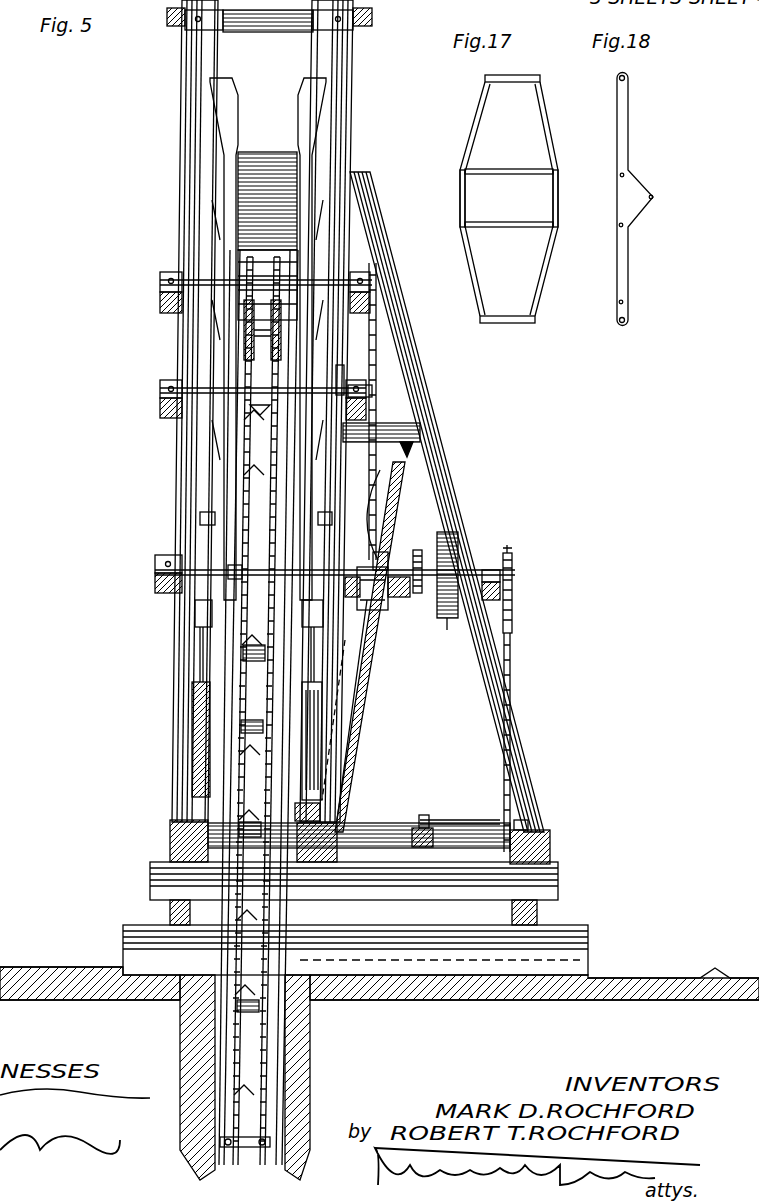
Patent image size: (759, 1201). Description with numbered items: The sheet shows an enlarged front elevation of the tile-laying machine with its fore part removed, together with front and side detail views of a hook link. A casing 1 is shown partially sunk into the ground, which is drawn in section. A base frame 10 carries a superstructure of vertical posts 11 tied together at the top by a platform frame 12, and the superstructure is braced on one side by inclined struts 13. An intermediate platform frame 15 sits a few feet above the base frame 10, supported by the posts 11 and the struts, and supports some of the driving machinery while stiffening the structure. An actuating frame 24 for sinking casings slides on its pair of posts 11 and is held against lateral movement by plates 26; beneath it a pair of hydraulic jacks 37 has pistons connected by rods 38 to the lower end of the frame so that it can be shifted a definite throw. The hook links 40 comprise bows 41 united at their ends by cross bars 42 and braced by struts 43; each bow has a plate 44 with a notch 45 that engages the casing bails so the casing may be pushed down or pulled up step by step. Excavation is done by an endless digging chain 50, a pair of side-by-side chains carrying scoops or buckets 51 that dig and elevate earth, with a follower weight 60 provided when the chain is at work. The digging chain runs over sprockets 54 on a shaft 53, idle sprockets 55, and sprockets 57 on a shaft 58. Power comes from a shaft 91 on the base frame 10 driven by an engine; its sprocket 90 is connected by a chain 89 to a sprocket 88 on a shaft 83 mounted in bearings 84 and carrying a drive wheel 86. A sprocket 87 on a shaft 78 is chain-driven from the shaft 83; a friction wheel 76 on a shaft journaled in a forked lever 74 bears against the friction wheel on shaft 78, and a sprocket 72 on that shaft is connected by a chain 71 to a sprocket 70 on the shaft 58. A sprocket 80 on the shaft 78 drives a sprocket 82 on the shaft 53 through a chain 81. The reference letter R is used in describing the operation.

In FIG. 5, the casing 1 is at (258, 152).
In FIG. 5, the base frame 10 is at (437, 853).
In FIG. 5, the vertical posts 11 is at (193, 118).
In FIG. 5, the platform frame 12 is at (374, 28).
In FIG. 5, the inclined struts 13 is at (457, 448).
In FIG. 5, the intermediate platform frame 15 is at (157, 582).
In FIG. 5, the actuating frame 24 is at (333, 67).
In FIG. 5, the plates 26 is at (202, 20).
In FIG. 5, the hydraulic jacks 37 is at (192, 745).
In FIG. 5, the rods 38 is at (200, 673).
In FIG. 17, the hook links 40 is at (474, 111).
In FIG. 18, the hook links 40 is at (613, 120).
In FIG. 17, the bows 41 is at (462, 183).
In FIG. 18, the bows 41 is at (628, 122).
In FIG. 17, the cross bars 42 is at (518, 75).
In FIG. 17, the struts 43 is at (500, 170).
In FIG. 17, the plate 44 is at (560, 222).
In FIG. 18, the plate 44 is at (638, 213).
In FIG. 17, the notch 45 is at (547, 196).
In FIG. 18, the notch 45 is at (661, 200).
In FIG. 5, the endless digging chain 50 is at (247, 450).
In FIG. 5, the scoops or buckets 51 is at (247, 646).
In FIG. 5, the shaft 53 is at (205, 392).
In FIG. 5, the sprockets 54 is at (258, 412).
In FIG. 5, the idle sprockets 55 is at (240, 343).
In FIG. 5, the sprockets 57 is at (247, 262).
In FIG. 5, the shaft 58 is at (232, 272).
In FIG. 5, the follower weight 60 is at (267, 1100).
In FIG. 5, the sprocket 70 is at (375, 265).
In FIG. 5, the chain 71 is at (370, 392).
In FIG. 5, the sprocket 72 is at (373, 482).
In FIG. 5, the forked lever 74 is at (385, 603).
In FIG. 5, the friction wheel 76 is at (382, 553).
In FIG. 5, the shaft 78 is at (233, 580).
In FIG. 5, the sprocket 80 is at (350, 607).
In FIG. 5, the chain 81 is at (373, 415).
In FIG. 5, the sprocket 82 is at (340, 370).
In FIG. 5, the shaft 83 is at (427, 572).
In FIG. 5, the bearings 84 is at (407, 562).
In FIG. 5, the drive wheel 86 is at (442, 622).
In FIG. 5, the sprocket 87 is at (402, 615).
In FIG. 5, the sprocket 88 is at (515, 563).
In FIG. 5, the chain 89 is at (512, 618).
In FIG. 5, the sprocket 90 is at (517, 808).
In FIG. 5, the shaft 91 is at (478, 805).
In FIG. 5, the reference letter R is at (217, 898).